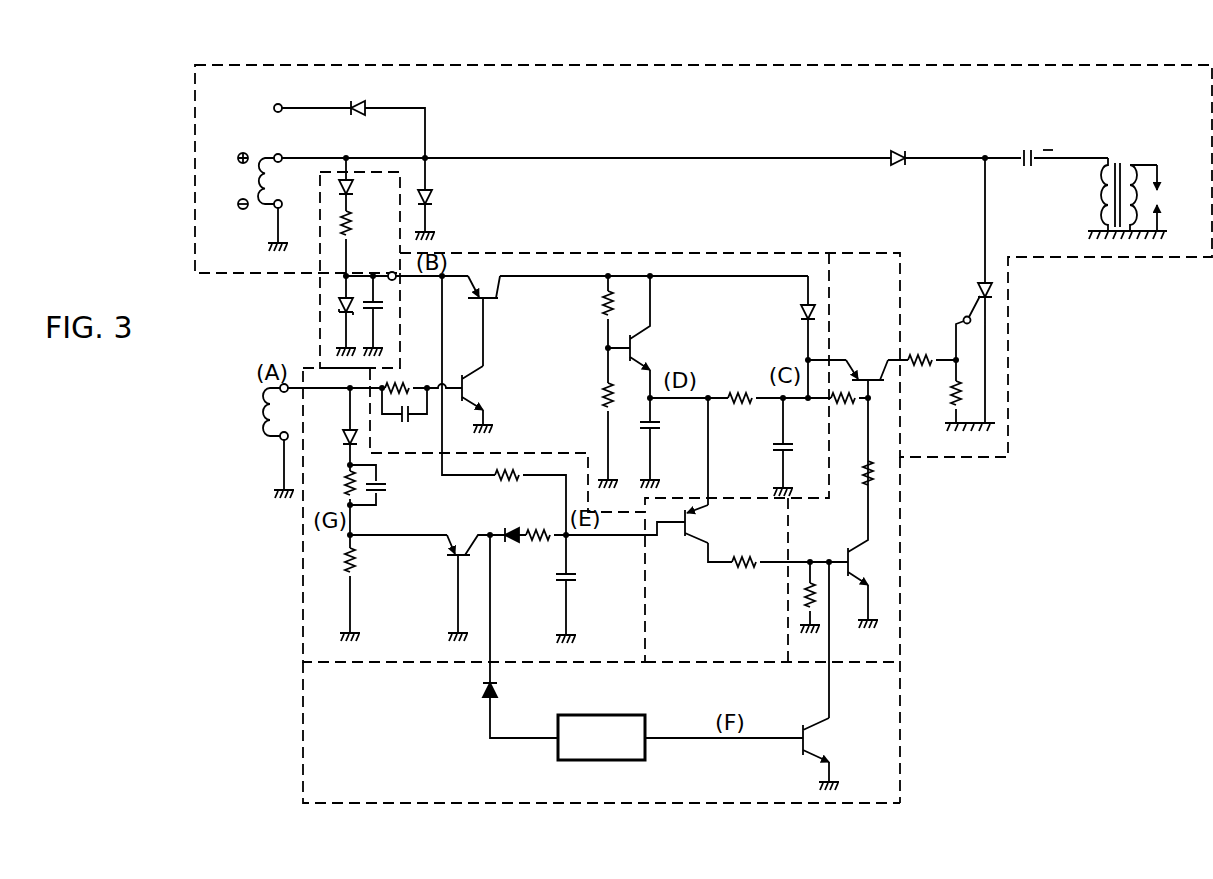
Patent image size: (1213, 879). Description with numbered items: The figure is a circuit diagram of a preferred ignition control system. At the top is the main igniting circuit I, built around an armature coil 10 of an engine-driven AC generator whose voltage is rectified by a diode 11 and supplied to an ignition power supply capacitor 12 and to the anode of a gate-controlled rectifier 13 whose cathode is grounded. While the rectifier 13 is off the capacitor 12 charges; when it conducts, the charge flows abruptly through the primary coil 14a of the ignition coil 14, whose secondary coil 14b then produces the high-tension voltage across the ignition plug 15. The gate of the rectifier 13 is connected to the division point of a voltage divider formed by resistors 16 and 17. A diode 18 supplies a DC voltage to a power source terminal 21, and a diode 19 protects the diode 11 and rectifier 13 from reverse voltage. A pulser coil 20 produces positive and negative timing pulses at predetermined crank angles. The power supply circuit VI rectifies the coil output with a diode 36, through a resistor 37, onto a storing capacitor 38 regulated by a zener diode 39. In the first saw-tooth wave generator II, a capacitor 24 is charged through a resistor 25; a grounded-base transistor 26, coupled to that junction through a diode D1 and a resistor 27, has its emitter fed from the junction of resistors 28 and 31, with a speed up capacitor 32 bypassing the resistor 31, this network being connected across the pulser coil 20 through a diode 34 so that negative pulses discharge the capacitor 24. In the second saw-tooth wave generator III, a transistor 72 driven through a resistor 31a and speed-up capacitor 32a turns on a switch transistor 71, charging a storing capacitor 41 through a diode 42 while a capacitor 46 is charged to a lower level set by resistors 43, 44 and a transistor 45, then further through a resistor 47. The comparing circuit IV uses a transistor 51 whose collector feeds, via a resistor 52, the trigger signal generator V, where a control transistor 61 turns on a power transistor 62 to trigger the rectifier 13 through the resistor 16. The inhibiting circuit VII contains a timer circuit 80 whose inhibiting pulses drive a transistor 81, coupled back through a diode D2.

The main igniting circuit I is at (653, 66).
The first saw-tooth wave generator II is at (303, 622).
The second saw-tooth wave generator III is at (617, 253).
The comparing circuit IV is at (690, 641).
The trigger signal generator V is at (902, 626).
The power supply circuit VI is at (318, 291).
The inhibiting circuit VII is at (302, 738).
The armature coil 10 is at (256, 184).
The diode 11 is at (896, 150).
The ignition power supply capacitor 12 is at (1028, 150).
The gate-controlled rectifier 13 is at (977, 292).
The ignition coil 14 is at (1118, 164).
The primary coil 14a is at (1105, 208).
The secondary winding 14b is at (1132, 214).
The ignition plug 15 is at (1162, 202).
The resistor 16 is at (921, 355).
The resistor 17 is at (952, 402).
The diode 18 is at (362, 102).
The diode 19 is at (433, 198).
The pulser coil 20 is at (258, 414).
The power source terminal 21 is at (273, 108).
The capacitor 24 is at (580, 582).
The resistor 25 is at (506, 482).
The transistor 26 is at (455, 540).
The resistor 27 is at (538, 543).
The resistor 28 is at (358, 572).
The resistor 31 is at (345, 491).
The resistor 31a is at (404, 384).
The speed up capacitor 32 is at (390, 490).
The speed-up capacitor 32a is at (405, 424).
The diode 34 is at (342, 436).
The diode 36 is at (354, 189).
The resistor 37 is at (355, 227).
The storing capacitor 38 is at (384, 305).
The zener diode 39 is at (337, 312).
The storing capacitor 41 is at (778, 450).
The diode 42 is at (803, 314).
The resistor 43 is at (613, 312).
The resistor 44 is at (612, 406).
The transistor 45 is at (640, 345).
The capacitor 46 is at (661, 430).
The resistor 47 is at (740, 393).
The transistor 51 is at (700, 520).
The resistor 52 is at (749, 558).
The control transistor 61 is at (860, 566).
The power transistor 62 is at (865, 372).
The switch transistor 71 is at (487, 304).
The transistor 72 is at (474, 391).
The timer circuit 80 is at (634, 715).
The transistor 81 is at (826, 740).
The diode D1 is at (512, 548).
The diode D2 is at (499, 692).